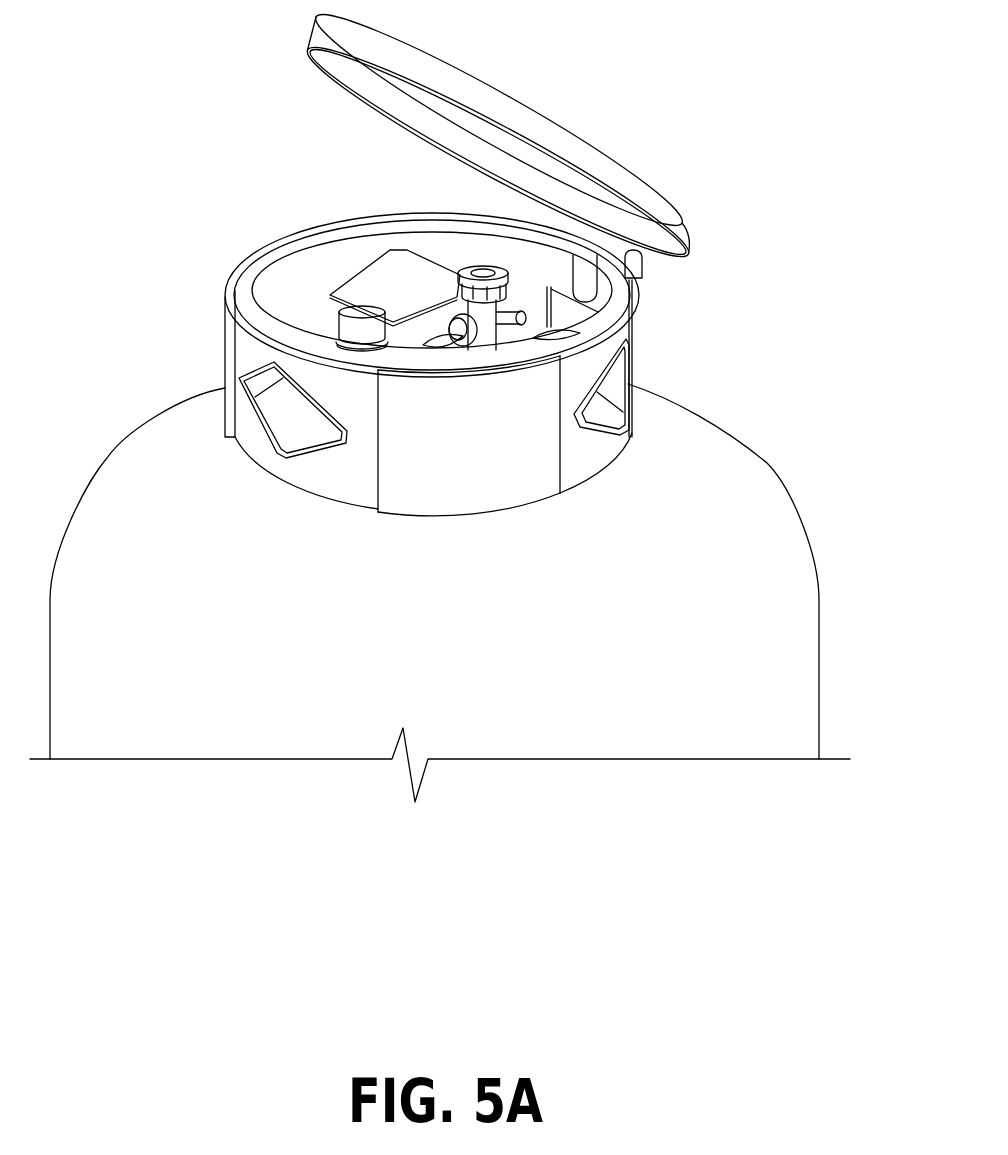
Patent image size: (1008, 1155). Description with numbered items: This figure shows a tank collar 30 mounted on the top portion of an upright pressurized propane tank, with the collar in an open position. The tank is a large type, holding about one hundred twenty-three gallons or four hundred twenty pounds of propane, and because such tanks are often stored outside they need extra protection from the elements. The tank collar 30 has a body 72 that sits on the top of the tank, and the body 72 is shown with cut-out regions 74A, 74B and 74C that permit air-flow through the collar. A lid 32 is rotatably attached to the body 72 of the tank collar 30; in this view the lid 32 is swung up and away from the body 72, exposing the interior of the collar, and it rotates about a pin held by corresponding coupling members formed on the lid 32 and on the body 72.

The tank collar 30 is at (558, 258).
The lid 32 is at (582, 140).
The body 72 is at (583, 460).
The cut-out region 74A is at (618, 385).
The cut-out region 74B is at (318, 430).
The cut-out region 74C is at (427, 295).